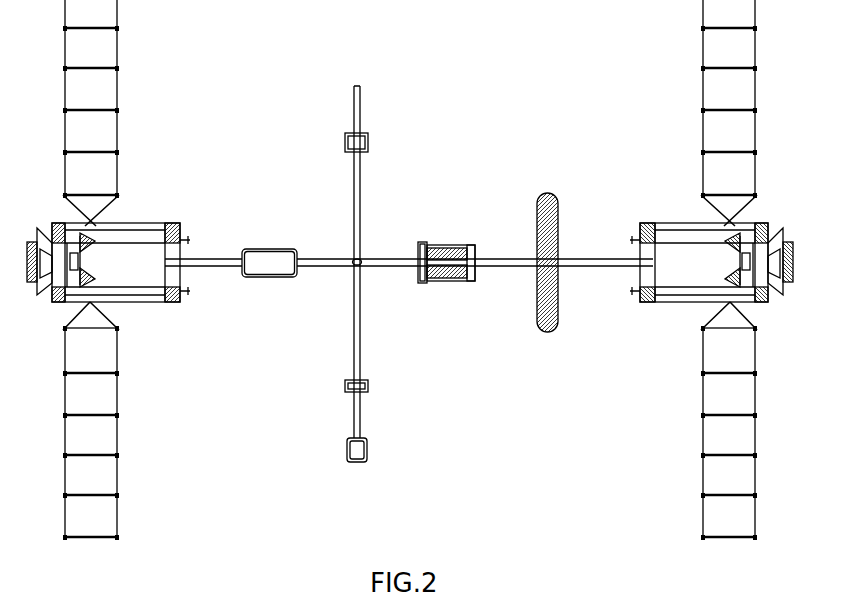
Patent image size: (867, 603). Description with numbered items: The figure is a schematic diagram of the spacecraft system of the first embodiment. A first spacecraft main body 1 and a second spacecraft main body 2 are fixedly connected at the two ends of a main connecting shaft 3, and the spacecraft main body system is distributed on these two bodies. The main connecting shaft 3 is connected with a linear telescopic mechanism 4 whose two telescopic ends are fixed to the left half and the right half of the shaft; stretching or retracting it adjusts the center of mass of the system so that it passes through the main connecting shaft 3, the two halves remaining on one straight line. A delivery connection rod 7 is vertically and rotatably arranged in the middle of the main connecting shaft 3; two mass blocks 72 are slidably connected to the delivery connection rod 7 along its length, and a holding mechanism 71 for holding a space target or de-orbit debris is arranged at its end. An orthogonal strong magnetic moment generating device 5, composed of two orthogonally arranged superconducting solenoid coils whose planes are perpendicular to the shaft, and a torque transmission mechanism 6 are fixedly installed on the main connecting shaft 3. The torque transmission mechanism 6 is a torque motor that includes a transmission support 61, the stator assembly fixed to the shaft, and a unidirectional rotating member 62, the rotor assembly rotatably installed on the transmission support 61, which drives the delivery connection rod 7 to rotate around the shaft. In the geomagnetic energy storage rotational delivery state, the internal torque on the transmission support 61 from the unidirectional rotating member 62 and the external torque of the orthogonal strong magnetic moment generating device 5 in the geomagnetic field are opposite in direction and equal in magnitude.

The first spacecraft main body 1 is at (100, 97).
The second spacecraft main body 2 is at (713, 88).
The main connecting shaft 3 is at (198, 262).
The linear telescopic mechanism 4 is at (262, 262).
The orthogonal strong magnetic moment generating device 5 is at (557, 246).
The torque transmission mechanism 6 is at (469, 226).
The transmission support 61 is at (465, 250).
The unidirectional rotating member 62 is at (472, 259).
The delivery connection rod 7 is at (360, 203).
The holding mechanism 71 is at (365, 450).
The mass block 72 is at (367, 142).